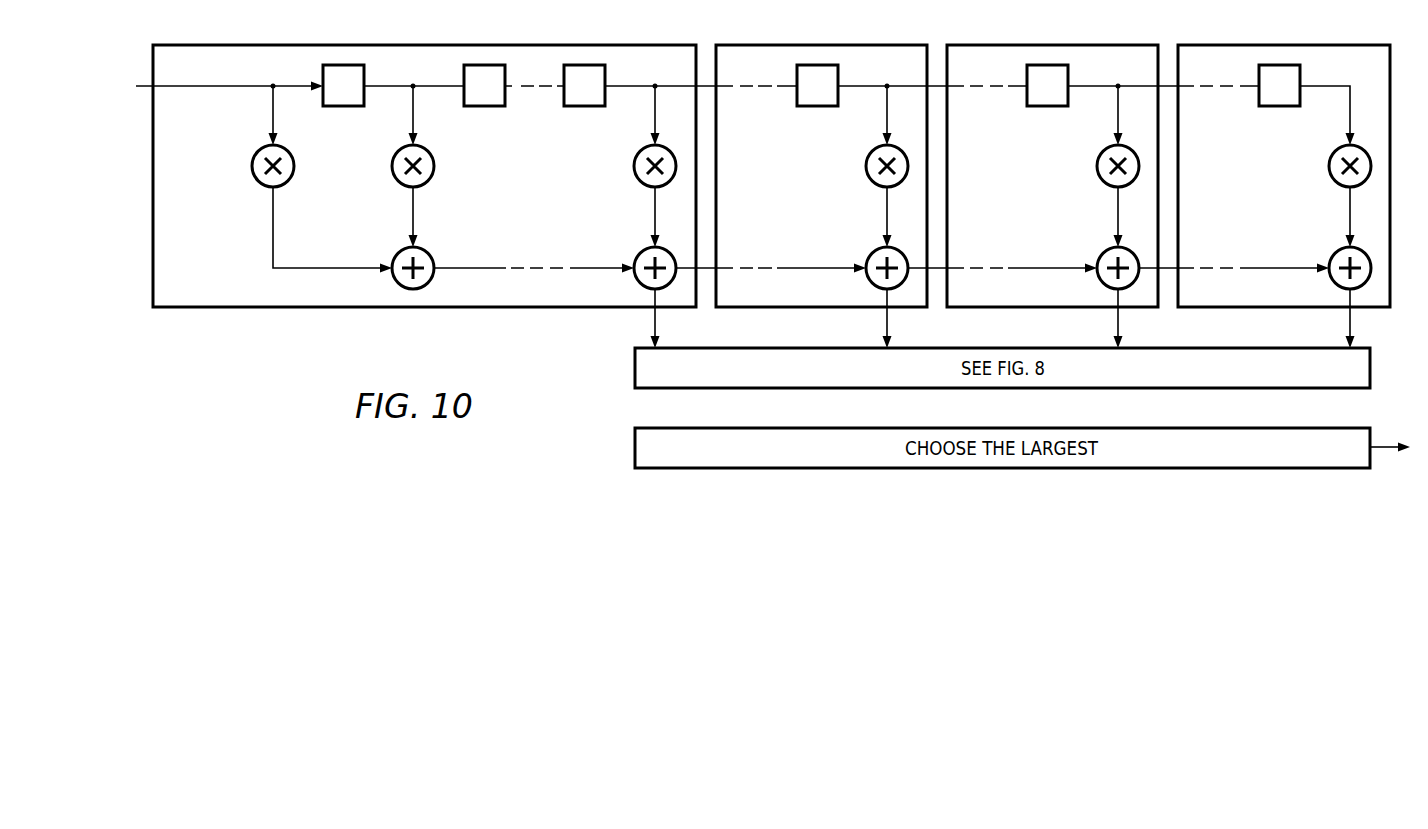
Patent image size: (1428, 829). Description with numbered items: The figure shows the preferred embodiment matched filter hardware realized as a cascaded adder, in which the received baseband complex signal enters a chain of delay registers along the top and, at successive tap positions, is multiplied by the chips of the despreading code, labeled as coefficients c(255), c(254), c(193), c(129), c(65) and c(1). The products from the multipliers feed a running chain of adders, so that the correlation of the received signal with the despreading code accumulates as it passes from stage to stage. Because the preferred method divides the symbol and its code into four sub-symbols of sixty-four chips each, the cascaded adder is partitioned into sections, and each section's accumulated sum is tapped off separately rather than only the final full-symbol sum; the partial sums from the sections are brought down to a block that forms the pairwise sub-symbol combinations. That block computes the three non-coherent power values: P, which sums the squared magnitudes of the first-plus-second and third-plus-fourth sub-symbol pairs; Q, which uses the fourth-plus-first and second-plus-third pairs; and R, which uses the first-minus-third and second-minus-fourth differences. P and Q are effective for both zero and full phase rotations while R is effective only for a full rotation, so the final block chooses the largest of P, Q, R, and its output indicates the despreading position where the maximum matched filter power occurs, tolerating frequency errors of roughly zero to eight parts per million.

The multiplier with coefficient c 255 is at (240, 167).
The multiplier with coefficient c 254 is at (380, 167).
The multiplier with coefficient c 193 is at (622, 167).
The multiplier with coefficient c 129 is at (854, 167).
The multiplier with coefficient c 65 is at (1085, 167).
The multiplier with coefficient c 1 is at (1317, 167).
The non-coherent power value P is at (938, 388).
The non-coherent power value Q is at (998, 388).
The non-coherent power value R is at (1058, 388).